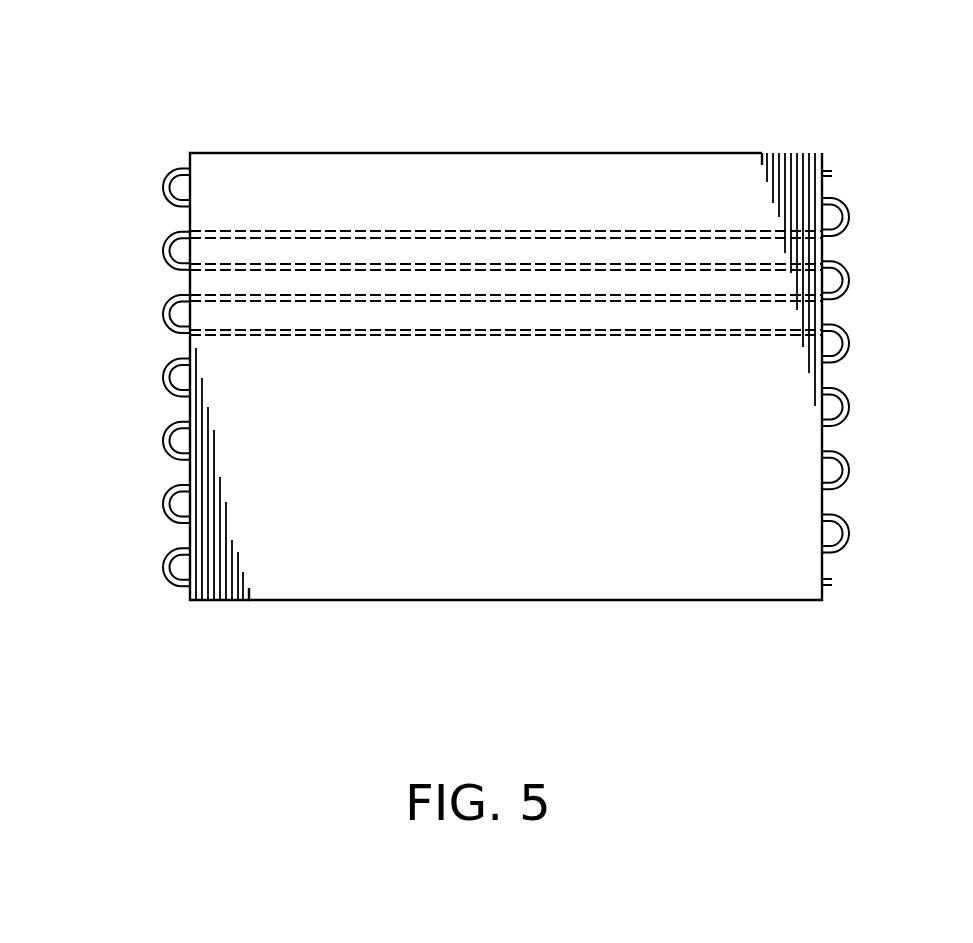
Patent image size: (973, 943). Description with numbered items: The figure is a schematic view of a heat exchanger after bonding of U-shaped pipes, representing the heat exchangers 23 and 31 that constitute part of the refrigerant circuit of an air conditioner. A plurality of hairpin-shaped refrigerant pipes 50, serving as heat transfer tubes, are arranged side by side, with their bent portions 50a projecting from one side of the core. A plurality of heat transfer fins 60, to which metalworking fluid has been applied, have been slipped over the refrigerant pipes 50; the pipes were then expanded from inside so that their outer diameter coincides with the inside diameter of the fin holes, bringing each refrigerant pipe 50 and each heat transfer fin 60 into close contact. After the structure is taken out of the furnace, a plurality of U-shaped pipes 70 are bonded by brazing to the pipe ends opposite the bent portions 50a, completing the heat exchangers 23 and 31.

The heat exchanger 23 is at (503, 311).
The heat exchanger 31 is at (503, 311).
The refrigerant pipe 50 is at (503, 341).
The bent portion 50a is at (163, 252).
The heat transfer fin 60 is at (804, 152).
The U-shaped pipe 70 is at (846, 268).